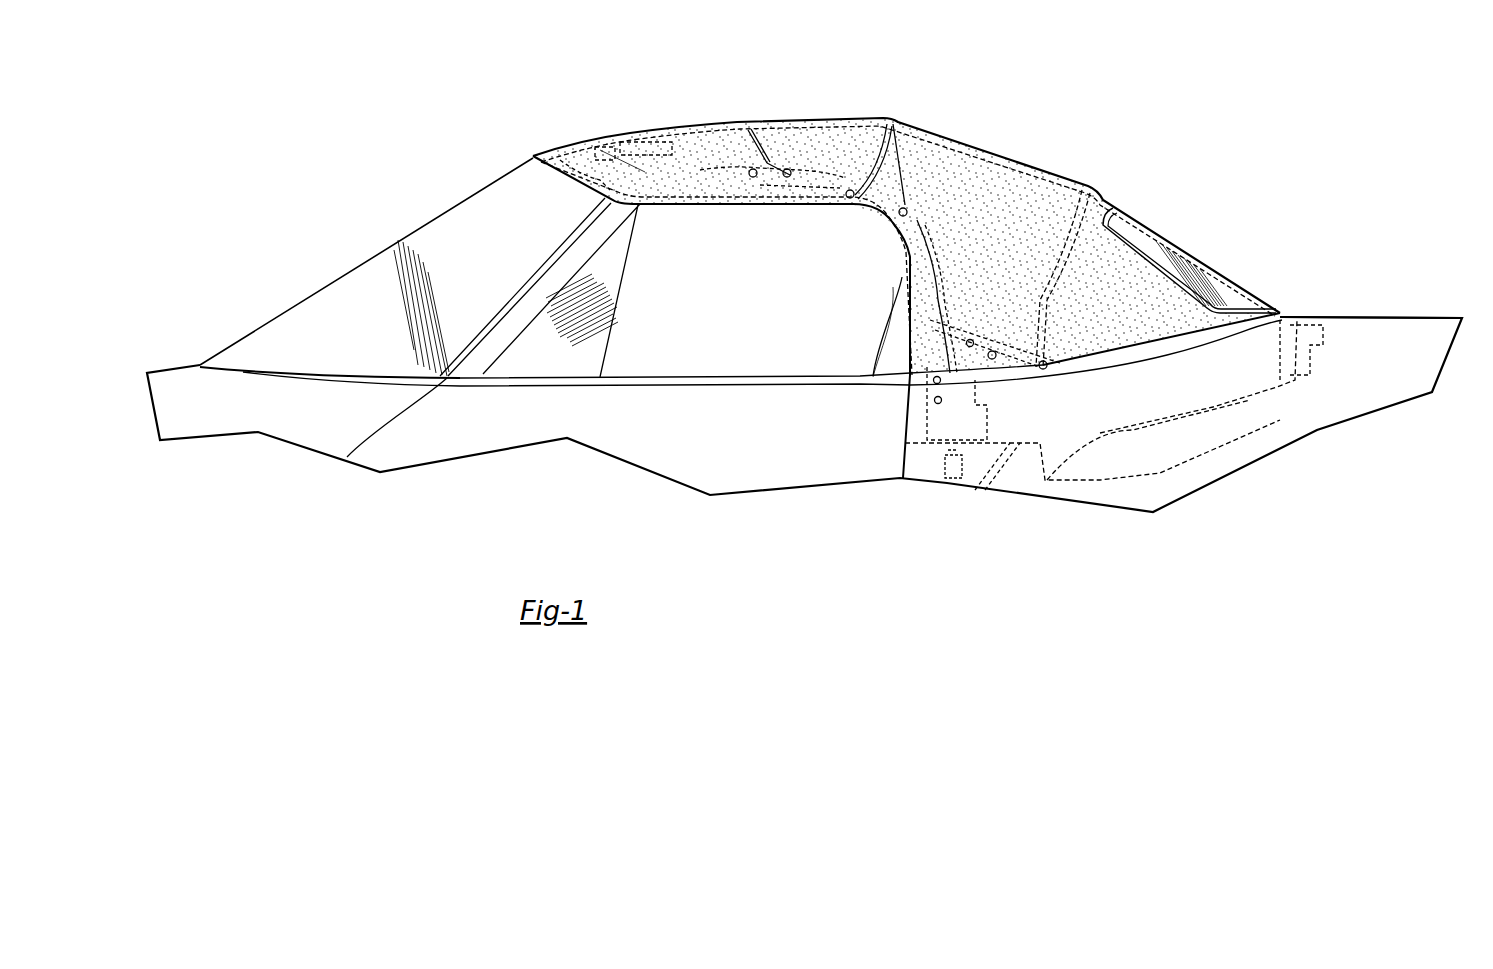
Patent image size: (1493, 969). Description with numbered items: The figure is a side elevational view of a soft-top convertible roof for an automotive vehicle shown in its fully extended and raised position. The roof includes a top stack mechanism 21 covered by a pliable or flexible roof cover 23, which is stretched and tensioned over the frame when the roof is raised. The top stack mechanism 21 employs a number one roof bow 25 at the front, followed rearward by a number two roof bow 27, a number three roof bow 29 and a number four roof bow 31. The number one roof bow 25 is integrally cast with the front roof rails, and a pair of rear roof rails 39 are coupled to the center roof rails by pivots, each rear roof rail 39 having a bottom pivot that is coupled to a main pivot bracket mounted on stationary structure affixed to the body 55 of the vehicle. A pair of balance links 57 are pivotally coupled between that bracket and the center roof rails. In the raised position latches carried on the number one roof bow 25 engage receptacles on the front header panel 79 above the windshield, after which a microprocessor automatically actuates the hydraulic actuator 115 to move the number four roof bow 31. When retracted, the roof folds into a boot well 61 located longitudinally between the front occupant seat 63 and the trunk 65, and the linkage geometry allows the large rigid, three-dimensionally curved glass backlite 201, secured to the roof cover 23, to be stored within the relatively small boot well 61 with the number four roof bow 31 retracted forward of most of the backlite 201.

The top stack mechanism 21 is at (875, 106).
The roof cover 23 is at (985, 173).
The number one roof bow 25 is at (592, 145).
The number two roof bow 27 is at (748, 130).
The number three roof bow 29 is at (889, 128).
The number four roof bow 31 is at (1070, 240).
The rear roof rail 39 is at (897, 230).
The body 55 is at (1143, 495).
The balance link 57 is at (900, 282).
The boot well 61 is at (1185, 433).
The front occupant seat 63 is at (893, 363).
The trunk 65 is at (1368, 335).
The front header panel 79 is at (530, 158).
The hydraulic actuator 115 is at (948, 477).
The backlite 201 is at (1137, 247).